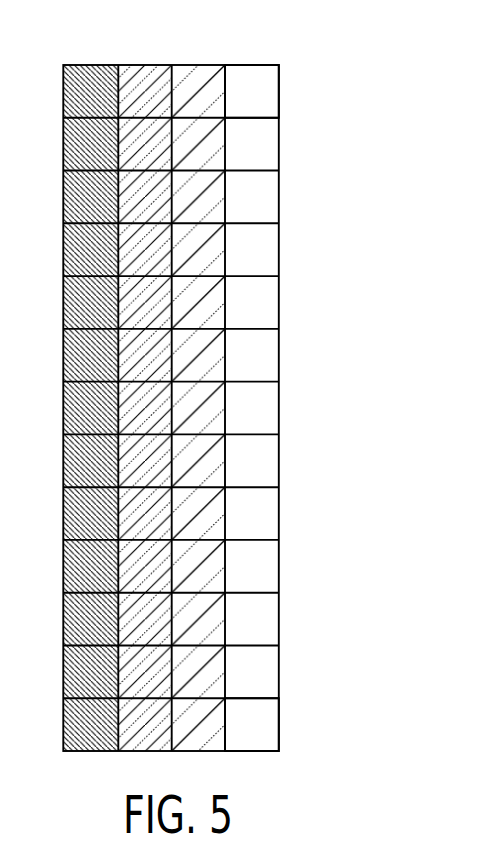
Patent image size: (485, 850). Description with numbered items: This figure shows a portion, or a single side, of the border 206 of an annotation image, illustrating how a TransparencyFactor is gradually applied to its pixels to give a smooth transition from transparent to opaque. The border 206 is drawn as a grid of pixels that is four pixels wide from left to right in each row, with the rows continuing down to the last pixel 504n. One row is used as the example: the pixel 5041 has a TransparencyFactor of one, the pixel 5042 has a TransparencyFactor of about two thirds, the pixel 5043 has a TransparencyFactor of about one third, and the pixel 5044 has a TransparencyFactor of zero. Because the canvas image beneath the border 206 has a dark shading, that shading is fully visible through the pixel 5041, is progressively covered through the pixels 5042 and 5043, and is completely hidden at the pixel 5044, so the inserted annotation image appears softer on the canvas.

The border 206 is at (253, 63).
The border pixel 5041 is at (80, 72).
The border pixel 5042 is at (146, 72).
The border pixel 5043 is at (198, 72).
The border pixel 5044 is at (270, 80).
The border pixel 504n is at (270, 727).